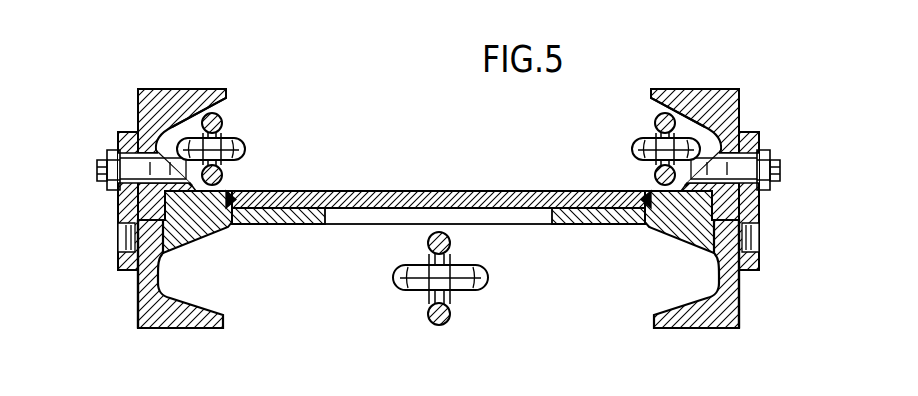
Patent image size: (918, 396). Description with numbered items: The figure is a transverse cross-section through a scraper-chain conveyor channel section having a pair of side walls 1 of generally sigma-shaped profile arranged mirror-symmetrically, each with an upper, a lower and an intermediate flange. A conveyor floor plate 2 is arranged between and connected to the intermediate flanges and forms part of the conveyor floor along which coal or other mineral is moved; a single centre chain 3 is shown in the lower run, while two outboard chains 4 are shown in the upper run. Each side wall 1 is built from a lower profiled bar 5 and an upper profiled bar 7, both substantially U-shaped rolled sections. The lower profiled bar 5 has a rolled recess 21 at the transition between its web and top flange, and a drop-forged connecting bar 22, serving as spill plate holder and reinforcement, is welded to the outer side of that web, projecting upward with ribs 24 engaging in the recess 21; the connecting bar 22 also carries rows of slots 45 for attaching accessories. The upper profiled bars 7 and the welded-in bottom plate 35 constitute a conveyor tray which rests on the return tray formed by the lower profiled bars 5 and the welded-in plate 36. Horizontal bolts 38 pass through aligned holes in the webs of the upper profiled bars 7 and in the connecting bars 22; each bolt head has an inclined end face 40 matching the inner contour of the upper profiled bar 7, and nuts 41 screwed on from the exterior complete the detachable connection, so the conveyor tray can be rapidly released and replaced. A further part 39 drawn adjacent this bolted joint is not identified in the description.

The side wall 1 is at (168, 82).
The conveyor floor plate 2 is at (455, 186).
The centre chain 3 is at (432, 323).
The outboard chains 4 is at (223, 125).
The lower profiled bar 5 is at (182, 332).
The upper profiled bar 7 is at (134, 100).
The recess 21 is at (150, 240).
The connecting bar 22 is at (128, 270).
The ribs 24 is at (168, 215).
The bottom plate 35 is at (343, 193).
The welded-in plate 36 is at (289, 225).
The horizontal bolts 38 is at (98, 160).
The side plate 39 is at (223, 183).
The inclined end face 40 is at (715, 160).
The nuts 41 is at (107, 192).
The slots 45 is at (118, 243).